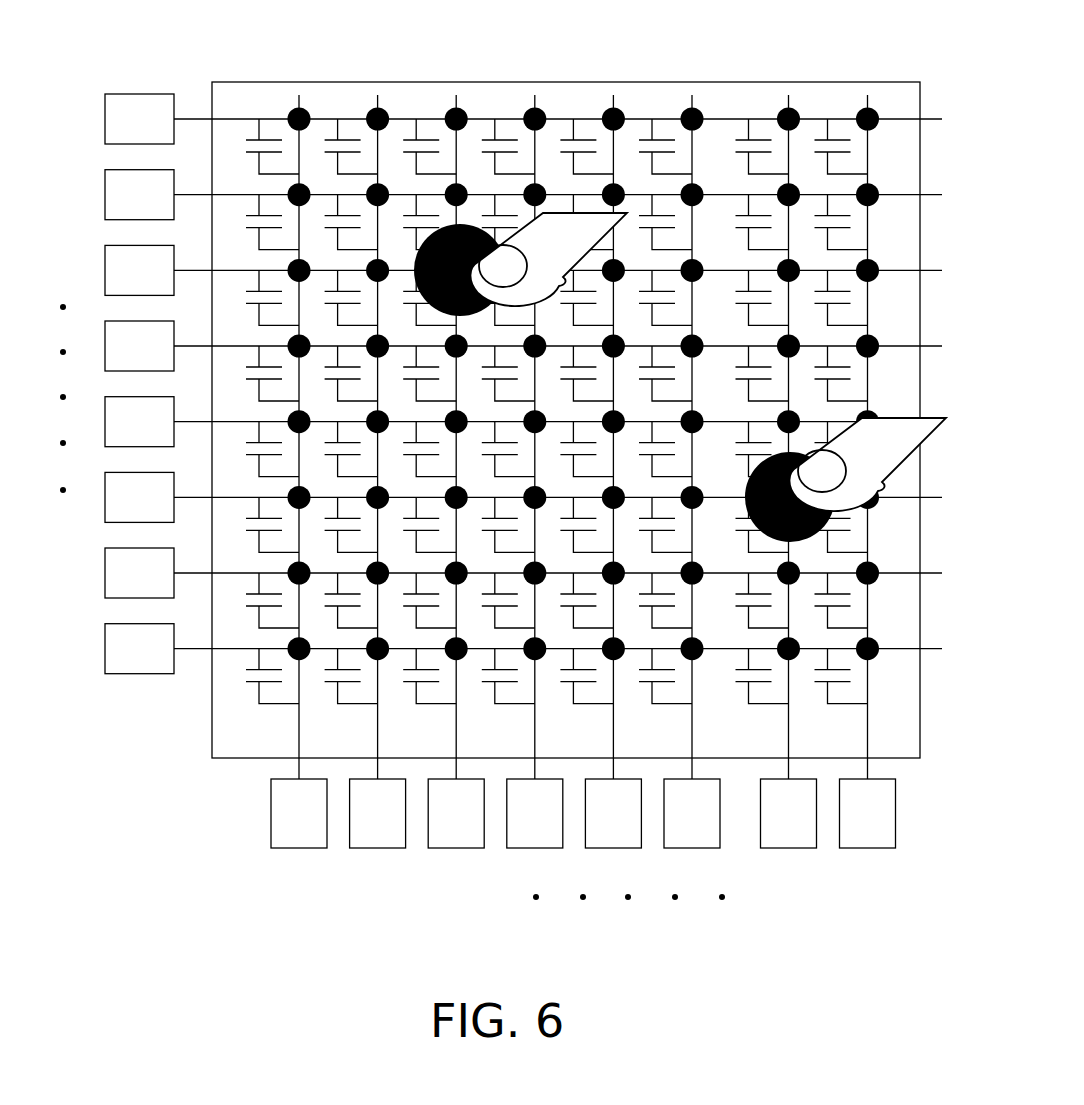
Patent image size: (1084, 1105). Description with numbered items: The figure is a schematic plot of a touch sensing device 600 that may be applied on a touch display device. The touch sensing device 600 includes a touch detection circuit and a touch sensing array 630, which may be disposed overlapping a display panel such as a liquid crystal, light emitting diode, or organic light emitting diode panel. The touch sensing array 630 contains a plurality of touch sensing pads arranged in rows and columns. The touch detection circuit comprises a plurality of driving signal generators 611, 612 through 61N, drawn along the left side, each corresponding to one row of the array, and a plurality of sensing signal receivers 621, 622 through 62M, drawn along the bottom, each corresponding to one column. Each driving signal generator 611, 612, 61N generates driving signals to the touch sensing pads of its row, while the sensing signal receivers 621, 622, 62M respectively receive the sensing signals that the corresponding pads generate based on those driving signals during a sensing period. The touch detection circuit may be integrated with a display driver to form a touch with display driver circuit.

The touch sensing device 600 is at (508, 491).
The touch sensing array 630 is at (752, 73).
The driving signal generator 611 is at (101, 119).
The driving signal generator 612 is at (101, 194).
The driving signal generator 61N is at (101, 648).
The sensing signal receiver 621 is at (300, 849).
The sensing signal receiver 622 is at (378, 849).
The sensing signal receiver 62M is at (868, 849).